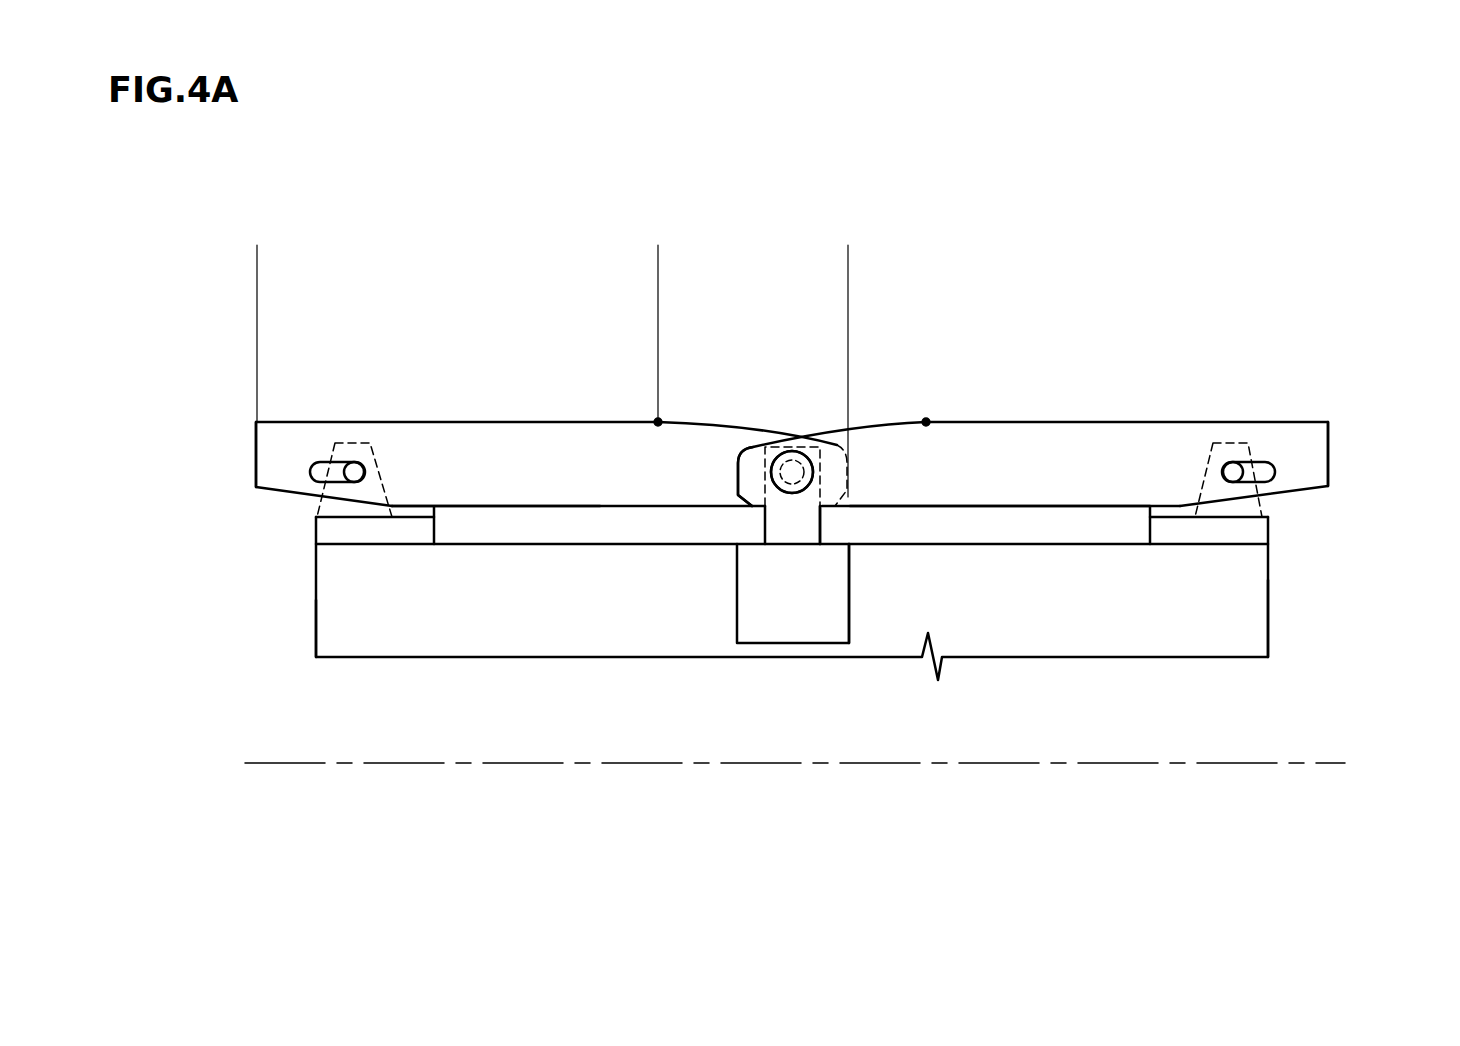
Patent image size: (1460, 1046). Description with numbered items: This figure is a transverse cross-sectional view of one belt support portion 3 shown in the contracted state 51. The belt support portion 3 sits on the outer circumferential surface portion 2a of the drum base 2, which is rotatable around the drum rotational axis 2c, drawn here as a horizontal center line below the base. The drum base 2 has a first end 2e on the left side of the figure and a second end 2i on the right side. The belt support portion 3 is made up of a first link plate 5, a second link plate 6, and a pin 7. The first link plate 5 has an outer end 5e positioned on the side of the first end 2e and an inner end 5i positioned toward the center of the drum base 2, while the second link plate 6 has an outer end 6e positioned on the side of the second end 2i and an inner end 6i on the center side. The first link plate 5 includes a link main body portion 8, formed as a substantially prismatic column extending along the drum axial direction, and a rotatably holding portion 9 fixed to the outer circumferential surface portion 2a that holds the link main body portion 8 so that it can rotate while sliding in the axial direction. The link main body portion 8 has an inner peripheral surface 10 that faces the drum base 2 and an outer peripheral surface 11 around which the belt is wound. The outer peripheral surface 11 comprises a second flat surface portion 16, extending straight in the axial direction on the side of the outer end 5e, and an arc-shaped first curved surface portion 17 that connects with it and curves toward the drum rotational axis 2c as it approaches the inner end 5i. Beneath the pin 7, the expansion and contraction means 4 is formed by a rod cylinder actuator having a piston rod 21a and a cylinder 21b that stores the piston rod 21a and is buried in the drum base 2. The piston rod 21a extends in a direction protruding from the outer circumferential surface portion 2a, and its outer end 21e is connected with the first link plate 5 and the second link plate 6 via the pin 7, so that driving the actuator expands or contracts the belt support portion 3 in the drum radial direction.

The contracted state 51 is at (250, 206).
The drum base 2 is at (283, 599).
The outer circumferential surface portion 2a is at (1103, 543).
The drum rotational axis 2c is at (1310, 762).
The first end 2e is at (316, 630).
The second end 2i is at (1268, 610).
The belt support portion 3 is at (1143, 357).
The expansion and contraction means 4 is at (803, 612).
The first link plate 5 is at (408, 343).
The outer end of first link plate 5e is at (256, 452).
The inner end of first link plate 5i is at (847, 462).
The second link plate 6 is at (1006, 460).
The outer end of second link plate 6e is at (1328, 452).
The inner end of second link plate 6i is at (737, 482).
The pin 7 is at (818, 447).
The link main body portion 8 is at (545, 470).
The rotatably holding portion 9 is at (402, 533).
The inner peripheral surface 10 is at (538, 507).
The outer peripheral surface 11 is at (620, 420).
The second flat surface portion 16 is at (653, 258).
The first curved surface portion 17 is at (845, 258).
The piston rod 21a is at (825, 523).
The cylinder 21b is at (850, 598).
The outer end of piston rod 21e is at (780, 490).